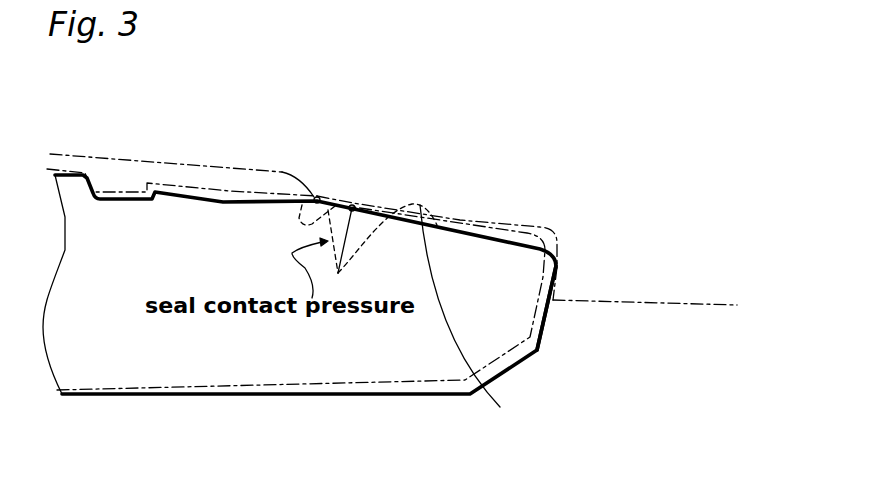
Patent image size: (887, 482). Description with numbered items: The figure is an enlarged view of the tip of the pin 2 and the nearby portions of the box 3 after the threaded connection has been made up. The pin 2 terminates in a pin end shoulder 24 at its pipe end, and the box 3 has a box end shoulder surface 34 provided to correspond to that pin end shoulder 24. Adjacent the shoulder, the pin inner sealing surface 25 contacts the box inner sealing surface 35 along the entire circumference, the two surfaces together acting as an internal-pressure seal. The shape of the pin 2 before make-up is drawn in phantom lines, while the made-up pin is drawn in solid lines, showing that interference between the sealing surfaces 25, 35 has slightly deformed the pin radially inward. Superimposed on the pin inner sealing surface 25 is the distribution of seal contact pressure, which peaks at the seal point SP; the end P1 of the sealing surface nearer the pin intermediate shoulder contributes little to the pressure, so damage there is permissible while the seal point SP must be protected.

The pin 2 is at (235, 394).
The box 3 is at (690, 307).
The pin end shoulder 24 is at (548, 317).
The pin inner sealing surface 25 is at (475, 321).
The box end shoulder surface 34 is at (547, 251).
The box inner sealing surface 35 is at (314, 197).
The end of the pin inner sealing surface P1 is at (319, 196).
The seal point SP is at (353, 205).